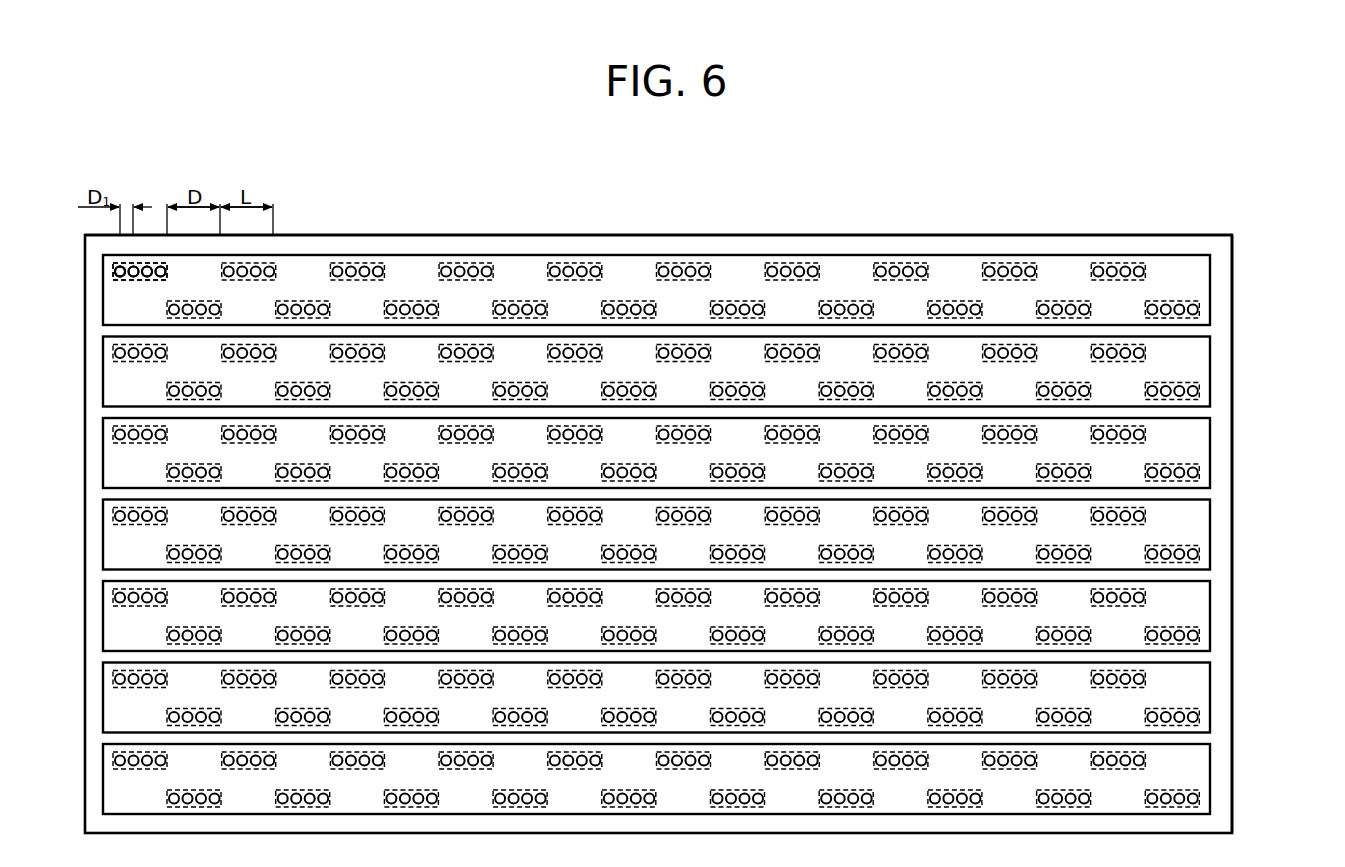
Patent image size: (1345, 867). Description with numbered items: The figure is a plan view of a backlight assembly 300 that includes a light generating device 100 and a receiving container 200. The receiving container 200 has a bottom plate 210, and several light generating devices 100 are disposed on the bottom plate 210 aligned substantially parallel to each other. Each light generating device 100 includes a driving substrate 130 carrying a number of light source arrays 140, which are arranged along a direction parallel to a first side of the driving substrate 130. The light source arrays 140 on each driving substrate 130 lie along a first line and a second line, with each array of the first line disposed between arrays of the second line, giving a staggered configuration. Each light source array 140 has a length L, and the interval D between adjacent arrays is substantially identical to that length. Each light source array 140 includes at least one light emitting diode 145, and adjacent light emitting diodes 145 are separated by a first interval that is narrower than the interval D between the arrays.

The light generating device 100 is at (616, 493).
The driving substrate 130 is at (300, 265).
The light source array 140 is at (115, 273).
The light emitting diode 145 is at (113, 264).
The receiving container 200 is at (1244, 402).
The bottom plate 210 is at (1232, 433).
The backlight assembly 300 is at (877, 232).